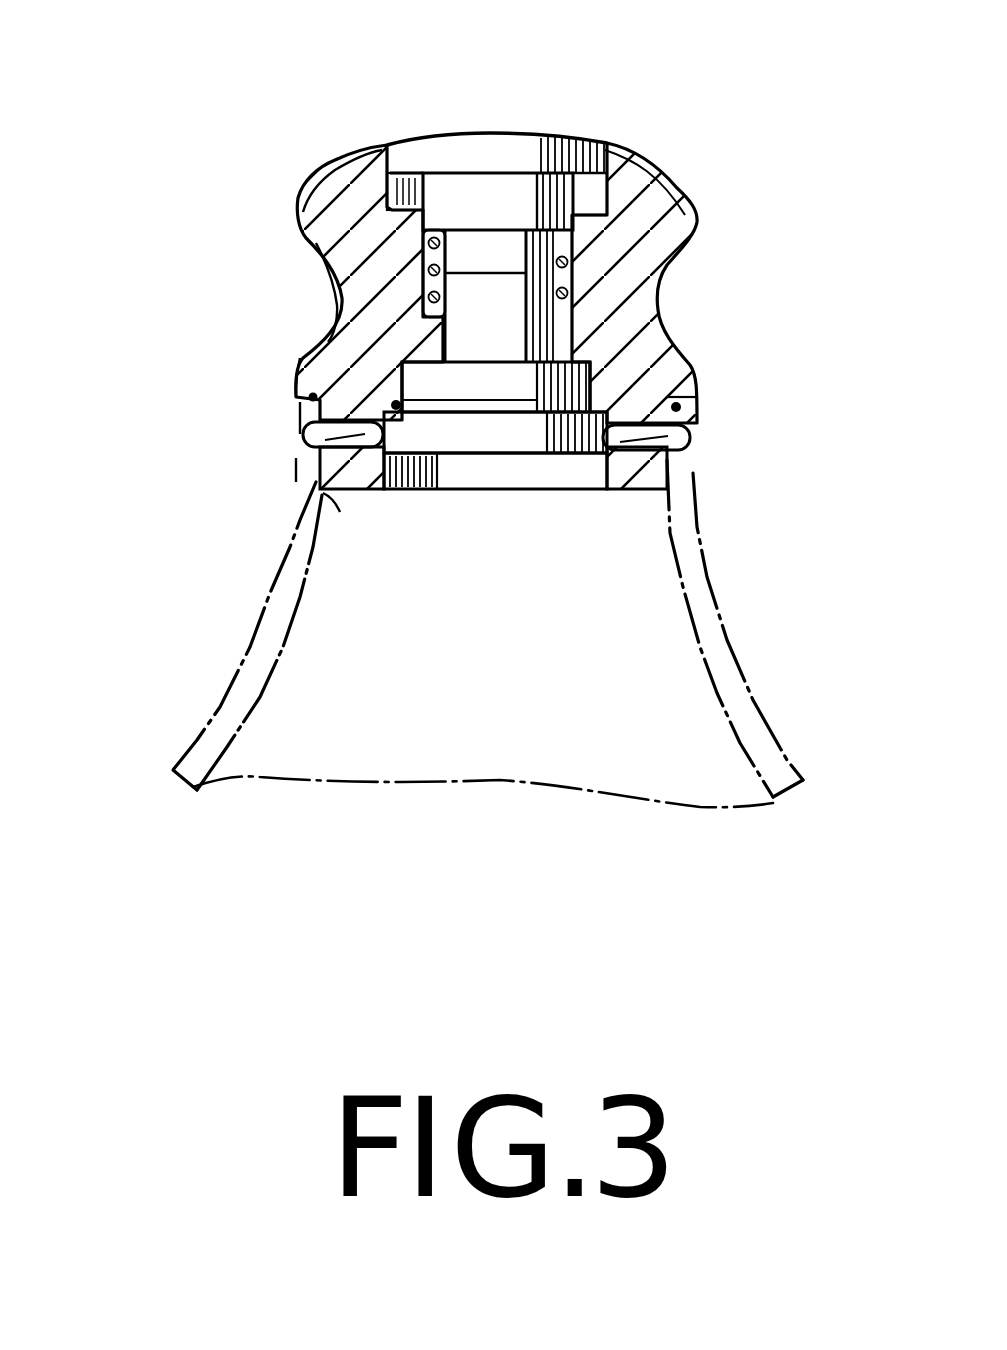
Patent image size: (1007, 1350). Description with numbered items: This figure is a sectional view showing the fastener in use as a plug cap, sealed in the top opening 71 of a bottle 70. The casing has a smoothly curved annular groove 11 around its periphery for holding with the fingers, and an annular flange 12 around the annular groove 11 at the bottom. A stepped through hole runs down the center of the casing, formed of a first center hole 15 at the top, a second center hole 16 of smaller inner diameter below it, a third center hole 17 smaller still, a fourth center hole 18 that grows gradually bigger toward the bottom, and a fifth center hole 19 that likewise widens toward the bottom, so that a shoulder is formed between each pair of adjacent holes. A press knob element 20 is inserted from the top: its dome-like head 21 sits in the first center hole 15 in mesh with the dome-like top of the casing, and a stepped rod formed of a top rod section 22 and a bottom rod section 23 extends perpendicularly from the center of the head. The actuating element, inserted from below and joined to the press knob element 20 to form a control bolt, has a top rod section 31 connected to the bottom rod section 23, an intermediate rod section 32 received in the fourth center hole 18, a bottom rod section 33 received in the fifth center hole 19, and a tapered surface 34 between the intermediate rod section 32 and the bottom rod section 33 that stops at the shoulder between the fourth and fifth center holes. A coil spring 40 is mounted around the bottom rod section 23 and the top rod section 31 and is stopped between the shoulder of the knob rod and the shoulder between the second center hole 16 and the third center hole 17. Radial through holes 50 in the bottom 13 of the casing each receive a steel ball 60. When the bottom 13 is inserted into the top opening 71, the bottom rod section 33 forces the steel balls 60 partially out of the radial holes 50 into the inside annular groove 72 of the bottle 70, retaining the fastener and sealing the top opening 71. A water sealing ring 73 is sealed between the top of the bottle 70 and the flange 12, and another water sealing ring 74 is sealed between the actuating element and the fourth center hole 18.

The press knob element 20 is at (522, 133).
The dome-like head 21 is at (475, 145).
The top rod section 22 is at (520, 210).
The first center hole 15 is at (590, 203).
The bottom rod section 23 is at (600, 216).
The second center hole 16 is at (565, 265).
The top rod section 31 is at (503, 248).
The third center hole 17 is at (513, 293).
The intermediate rod section 32 is at (595, 376).
The fourth center hole 18 is at (630, 390).
The steel ball 60 is at (305, 440).
The annular groove 11 is at (343, 300).
The radial through hole 50 is at (394, 404).
The annular flange 12 is at (300, 356).
The water sealing ring 73 is at (310, 397).
The inside annular groove 72 is at (294, 431).
The bottom 13 is at (316, 486).
The top opening 71 is at (334, 503).
The bottle 70 is at (748, 712).
The bottom rod section 33 is at (496, 443).
The tapered surface 34 is at (522, 410).
The fifth center hole 19 is at (598, 460).
The water sealing ring 74 is at (304, 186).
The coil spring 40 is at (433, 230).